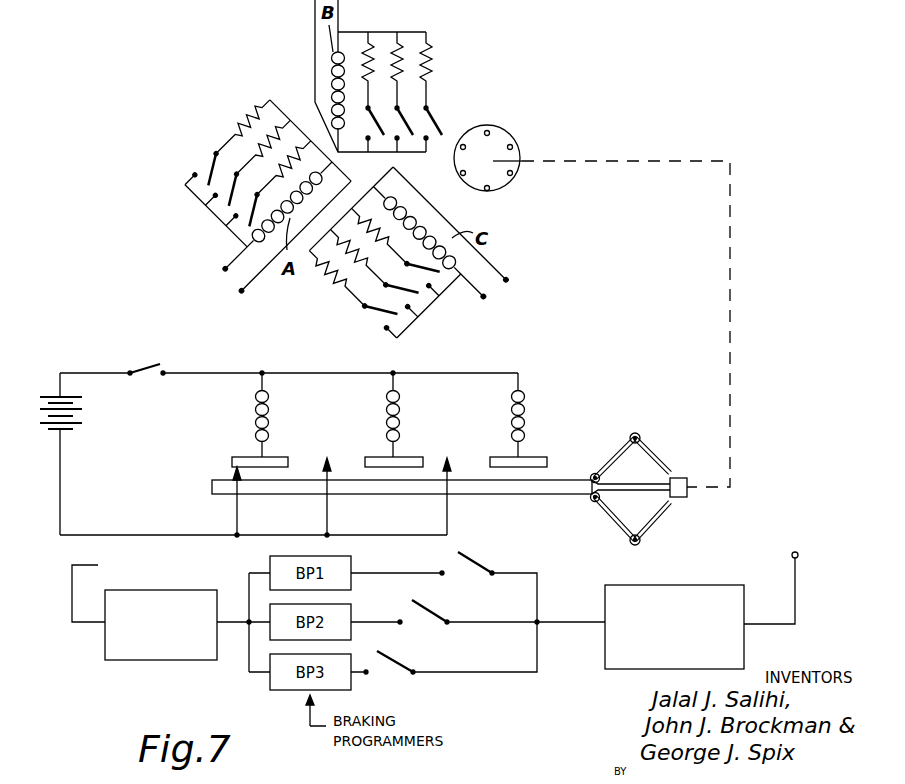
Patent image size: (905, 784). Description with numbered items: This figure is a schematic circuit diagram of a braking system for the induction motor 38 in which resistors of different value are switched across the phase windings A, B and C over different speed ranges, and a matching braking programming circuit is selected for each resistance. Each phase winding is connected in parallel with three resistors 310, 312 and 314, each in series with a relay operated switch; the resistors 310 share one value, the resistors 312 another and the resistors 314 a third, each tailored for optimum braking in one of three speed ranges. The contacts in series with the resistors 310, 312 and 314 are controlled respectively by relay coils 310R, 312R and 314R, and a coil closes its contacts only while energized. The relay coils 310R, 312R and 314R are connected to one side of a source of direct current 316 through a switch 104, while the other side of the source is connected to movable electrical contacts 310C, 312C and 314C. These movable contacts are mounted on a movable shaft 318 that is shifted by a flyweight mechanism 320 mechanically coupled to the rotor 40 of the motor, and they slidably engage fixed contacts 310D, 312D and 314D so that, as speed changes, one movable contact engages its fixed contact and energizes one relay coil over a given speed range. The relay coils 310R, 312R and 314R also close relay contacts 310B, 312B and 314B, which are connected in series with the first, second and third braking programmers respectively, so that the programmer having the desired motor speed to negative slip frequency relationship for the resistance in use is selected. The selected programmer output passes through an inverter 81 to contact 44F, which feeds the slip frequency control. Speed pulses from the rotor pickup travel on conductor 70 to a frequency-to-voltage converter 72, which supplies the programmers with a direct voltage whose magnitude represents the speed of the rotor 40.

The resistors 310 is at (369, 46).
The resistors 312 is at (400, 53).
The resistors 314 is at (433, 60).
The induction motor 38 is at (451, 125).
The rotor 40 is at (517, 145).
The switch 104 is at (152, 363).
The source of direct current 316 is at (78, 410).
The relay coil 310R is at (268, 412).
The relay coil 312R is at (400, 408).
The relay coil 314R is at (527, 410).
The fixed contact 310D is at (273, 457).
The fixed contact 312D is at (405, 457).
The fixed contact 314D is at (532, 457).
The movable electrical contact 310C is at (238, 523).
The movable electrical contact 312C is at (328, 517).
The movable electrical contact 314C is at (447, 517).
The movable shaft 318 is at (545, 488).
The flyweight mechanism 320 is at (666, 458).
The inverter 81 is at (183, 660).
The fixed contact 44F is at (107, 589).
The relay contact 310B is at (463, 558).
The relay contact 312B is at (420, 605).
The relay contact 314B is at (390, 652).
The frequency-to-voltage converter 72 is at (658, 585).
The conductor 70 is at (797, 594).